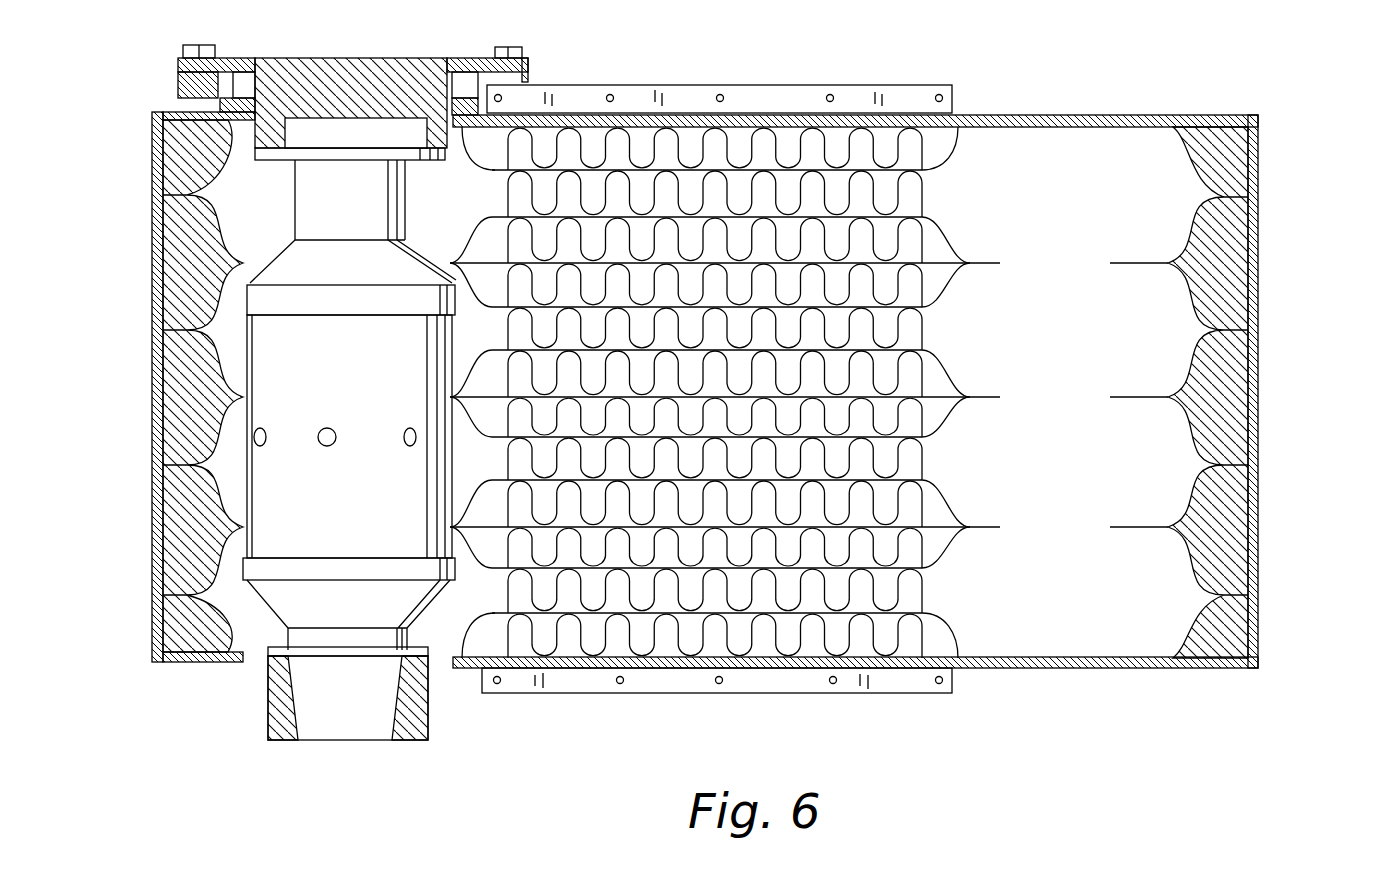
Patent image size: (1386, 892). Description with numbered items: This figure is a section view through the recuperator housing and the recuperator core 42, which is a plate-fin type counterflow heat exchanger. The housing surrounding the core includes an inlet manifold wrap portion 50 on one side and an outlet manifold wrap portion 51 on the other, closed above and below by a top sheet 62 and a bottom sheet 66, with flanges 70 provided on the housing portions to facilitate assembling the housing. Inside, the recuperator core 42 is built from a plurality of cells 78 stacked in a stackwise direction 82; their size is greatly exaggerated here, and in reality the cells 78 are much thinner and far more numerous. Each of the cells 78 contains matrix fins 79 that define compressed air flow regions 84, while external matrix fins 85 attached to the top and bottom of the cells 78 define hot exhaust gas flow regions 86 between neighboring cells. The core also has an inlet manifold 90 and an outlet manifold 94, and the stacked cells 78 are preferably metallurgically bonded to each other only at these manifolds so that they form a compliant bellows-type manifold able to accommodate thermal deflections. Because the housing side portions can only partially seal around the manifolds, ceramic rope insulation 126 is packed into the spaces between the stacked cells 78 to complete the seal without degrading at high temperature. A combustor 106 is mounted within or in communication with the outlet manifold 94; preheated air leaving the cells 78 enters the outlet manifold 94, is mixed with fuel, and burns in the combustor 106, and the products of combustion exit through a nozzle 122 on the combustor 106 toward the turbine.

The recuperator core 42 is at (970, 371).
The inlet manifold wrap portion 50 is at (1260, 460).
The outlet manifold wrap portion 51 is at (155, 472).
The top sheet 62 is at (1153, 121).
The bottom sheet 66 is at (1150, 670).
The flanges 70 is at (755, 88).
The cells 78 is at (952, 217).
The matrix fins 79 is at (922, 593).
The stackwise direction 82 is at (1368, 328).
The compressed air flow regions 84 is at (885, 190).
The external matrix fins 85 is at (520, 412).
The hot exhaust gas flow regions 86 is at (887, 136).
The inlet manifold 90 is at (1077, 152).
The outlet manifold 94 is at (230, 183).
The combustor 106 is at (255, 497).
The nozzle 122 is at (276, 714).
The ceramic rope insulation 126 is at (172, 318).